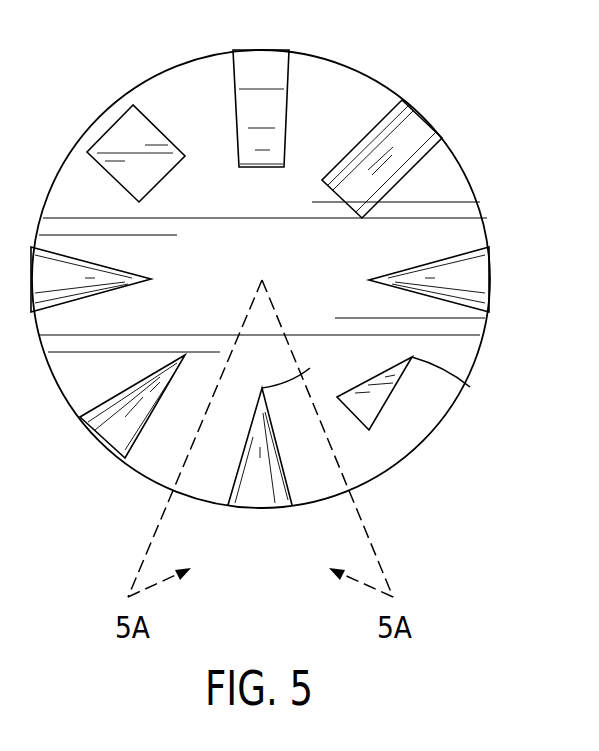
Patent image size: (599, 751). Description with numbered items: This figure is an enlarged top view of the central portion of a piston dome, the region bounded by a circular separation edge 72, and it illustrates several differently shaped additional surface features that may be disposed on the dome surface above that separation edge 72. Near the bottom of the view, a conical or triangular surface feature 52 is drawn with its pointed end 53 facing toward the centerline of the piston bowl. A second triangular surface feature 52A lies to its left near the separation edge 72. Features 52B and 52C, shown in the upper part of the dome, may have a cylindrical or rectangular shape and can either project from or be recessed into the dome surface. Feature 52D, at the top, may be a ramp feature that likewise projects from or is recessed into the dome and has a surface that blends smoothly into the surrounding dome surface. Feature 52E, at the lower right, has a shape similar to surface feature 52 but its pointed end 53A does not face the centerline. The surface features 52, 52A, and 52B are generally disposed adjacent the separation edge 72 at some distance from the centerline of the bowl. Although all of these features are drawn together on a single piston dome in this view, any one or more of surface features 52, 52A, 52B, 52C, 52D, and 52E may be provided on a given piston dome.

The separation edge 72 is at (485, 226).
The surface feature 52 is at (280, 490).
The surface feature 52A is at (108, 434).
The surface feature 52B is at (418, 133).
The surface feature 52C is at (115, 140).
The ramp feature 52D is at (272, 67).
The surface feature 52E is at (350, 398).
The pointed end 53 is at (310, 368).
The pointed end 53A is at (470, 387).